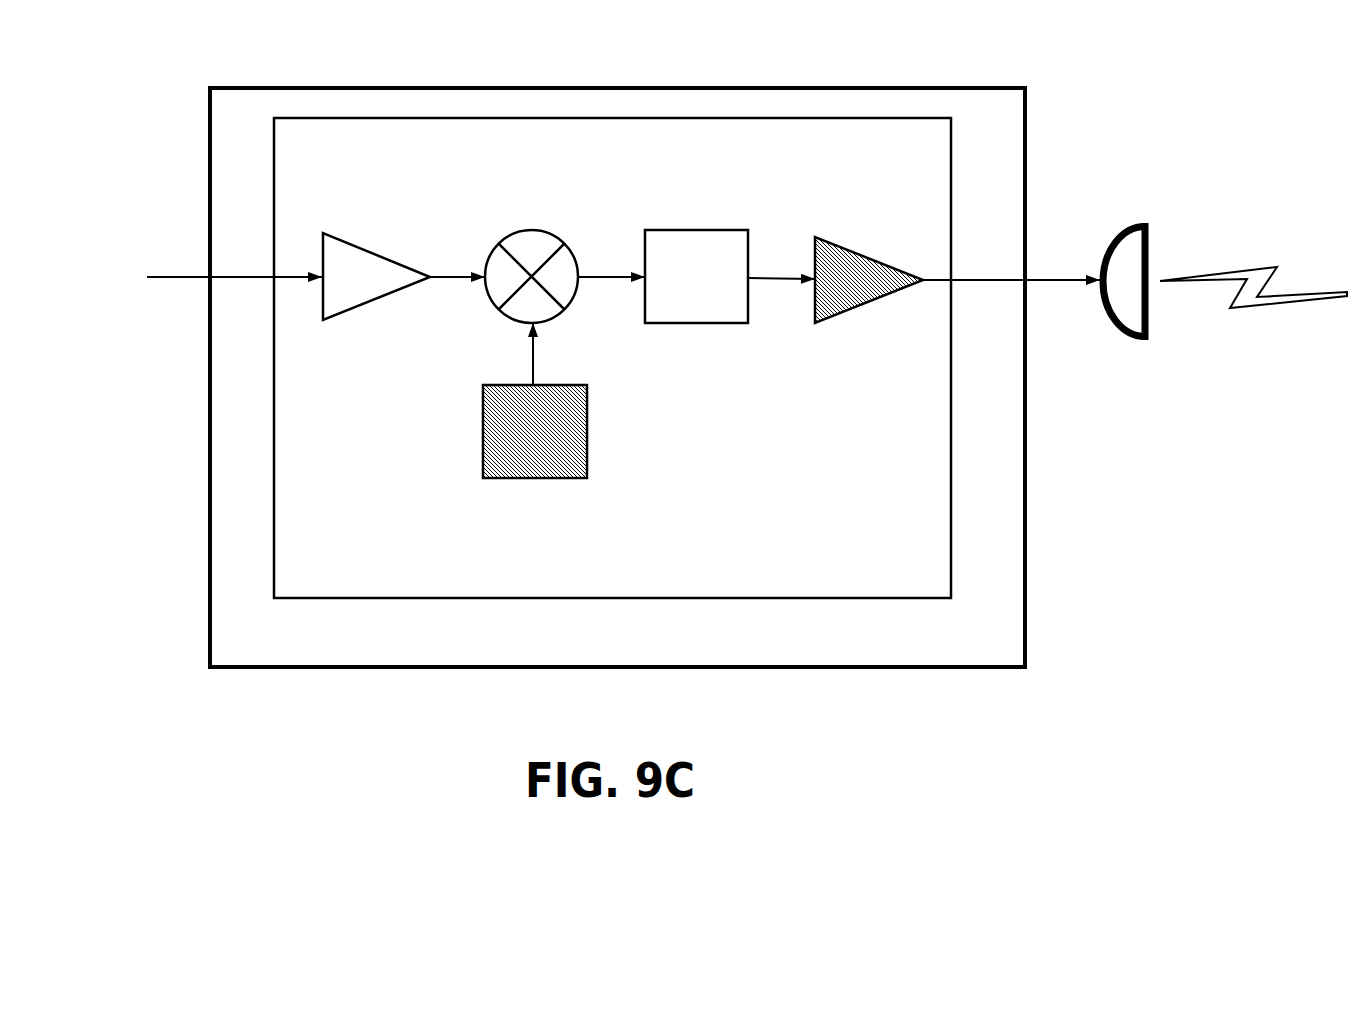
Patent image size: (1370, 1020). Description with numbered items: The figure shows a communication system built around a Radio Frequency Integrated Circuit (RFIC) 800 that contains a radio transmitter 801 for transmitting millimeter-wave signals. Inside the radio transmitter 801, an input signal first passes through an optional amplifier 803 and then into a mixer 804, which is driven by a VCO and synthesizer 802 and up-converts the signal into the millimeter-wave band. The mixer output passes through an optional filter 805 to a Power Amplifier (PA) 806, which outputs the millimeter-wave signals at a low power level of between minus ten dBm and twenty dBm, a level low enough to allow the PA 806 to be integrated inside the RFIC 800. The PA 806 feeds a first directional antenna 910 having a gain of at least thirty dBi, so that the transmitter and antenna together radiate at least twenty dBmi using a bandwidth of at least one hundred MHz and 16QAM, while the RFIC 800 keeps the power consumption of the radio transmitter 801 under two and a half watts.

The Radio Frequency Integrated Circuit (RFIC) 800 is at (1015, 655).
The radio transmitter 801 is at (757, 582).
The VCO and synthesizer 802 is at (587, 430).
The amplifier 803 is at (373, 250).
The mixer 804 is at (540, 230).
The filter 805 is at (682, 230).
The Power Amplifier (PA) 806 is at (853, 252).
The first directional antenna 910 is at (1125, 332).